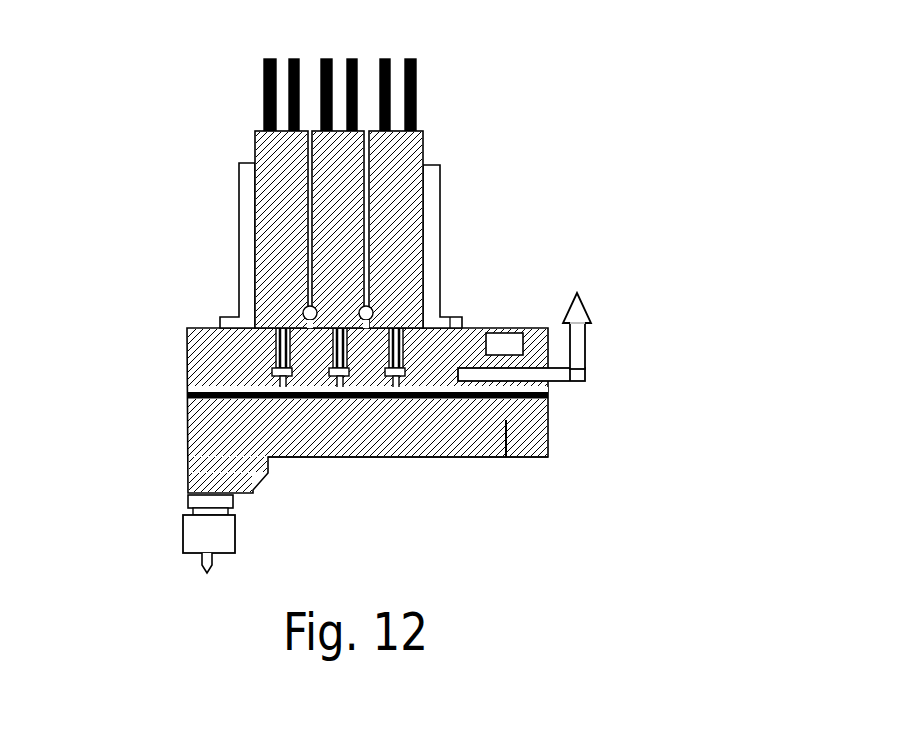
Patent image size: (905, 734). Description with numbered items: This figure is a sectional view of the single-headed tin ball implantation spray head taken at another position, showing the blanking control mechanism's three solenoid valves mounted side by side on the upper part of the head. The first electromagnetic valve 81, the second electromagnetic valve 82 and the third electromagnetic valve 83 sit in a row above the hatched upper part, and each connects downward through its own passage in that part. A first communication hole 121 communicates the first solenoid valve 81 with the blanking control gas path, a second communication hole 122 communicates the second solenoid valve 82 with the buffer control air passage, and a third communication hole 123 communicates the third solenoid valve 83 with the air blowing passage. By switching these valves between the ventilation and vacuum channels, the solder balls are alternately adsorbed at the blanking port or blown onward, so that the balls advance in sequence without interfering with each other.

The first electromagnetic valve 81 is at (270, 157).
The second electromagnetic valve 82 is at (332, 137).
The third electromagnetic valve 83 is at (412, 140).
The first communication hole 121 is at (230, 371).
The second communication hole 122 is at (337, 383).
The third communication hole 123 is at (415, 400).